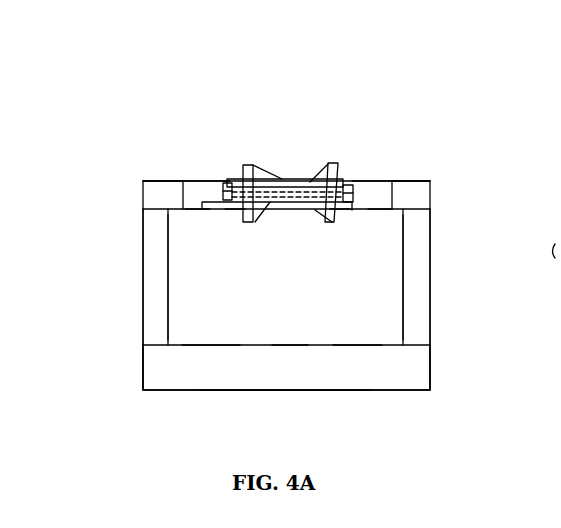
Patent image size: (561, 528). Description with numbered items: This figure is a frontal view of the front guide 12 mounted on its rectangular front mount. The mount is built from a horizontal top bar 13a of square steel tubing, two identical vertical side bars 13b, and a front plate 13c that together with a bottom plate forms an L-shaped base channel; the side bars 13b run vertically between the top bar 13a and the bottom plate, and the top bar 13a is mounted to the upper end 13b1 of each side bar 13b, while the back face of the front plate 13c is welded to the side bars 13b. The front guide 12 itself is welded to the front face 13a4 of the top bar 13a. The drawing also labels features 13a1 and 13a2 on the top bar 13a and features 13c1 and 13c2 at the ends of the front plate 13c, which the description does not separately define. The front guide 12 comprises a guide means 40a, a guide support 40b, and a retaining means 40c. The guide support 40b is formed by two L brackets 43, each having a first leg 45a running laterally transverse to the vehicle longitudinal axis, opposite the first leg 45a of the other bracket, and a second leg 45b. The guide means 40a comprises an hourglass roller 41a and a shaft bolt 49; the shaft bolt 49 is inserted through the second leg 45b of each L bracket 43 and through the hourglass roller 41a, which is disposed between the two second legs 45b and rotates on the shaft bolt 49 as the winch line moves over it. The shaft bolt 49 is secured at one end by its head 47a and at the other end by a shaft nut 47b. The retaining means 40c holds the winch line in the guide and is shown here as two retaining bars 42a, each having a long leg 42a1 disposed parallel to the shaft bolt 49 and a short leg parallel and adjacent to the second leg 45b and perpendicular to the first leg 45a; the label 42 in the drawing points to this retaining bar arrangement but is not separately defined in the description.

The front guide 12 is at (201, 140).
The top bar 13a is at (131, 192).
The left end portion of top wall 13a1 is at (143, 206).
The right end portion of top wall 13a2 is at (431, 195).
The front face of the top bar 13a4 is at (145, 181).
The side bar 13b is at (132, 275).
The upper end of side bar 13b1 is at (160, 212).
The front plate 13c is at (398, 399).
The left end of bottom wall 13c1 is at (143, 350).
The right end of bottom wall 13c2 is at (432, 360).
The guide means 40a is at (333, 83).
The guide support 40b is at (285, 392).
The retaining means 40c is at (308, 267).
The hourglass roller 41a is at (310, 166).
The support member 42 is at (322, 168).
The retaining bar 42a is at (260, 196).
The long leg of retaining bar 42a1 is at (272, 168).
The L bracket 43 is at (285, 392).
The first leg 45a is at (197, 221).
The second leg 45b is at (235, 221).
The head 47a is at (364, 187).
The shaft nut 47b is at (210, 182).
The shaft bolt 49 is at (317, 183).